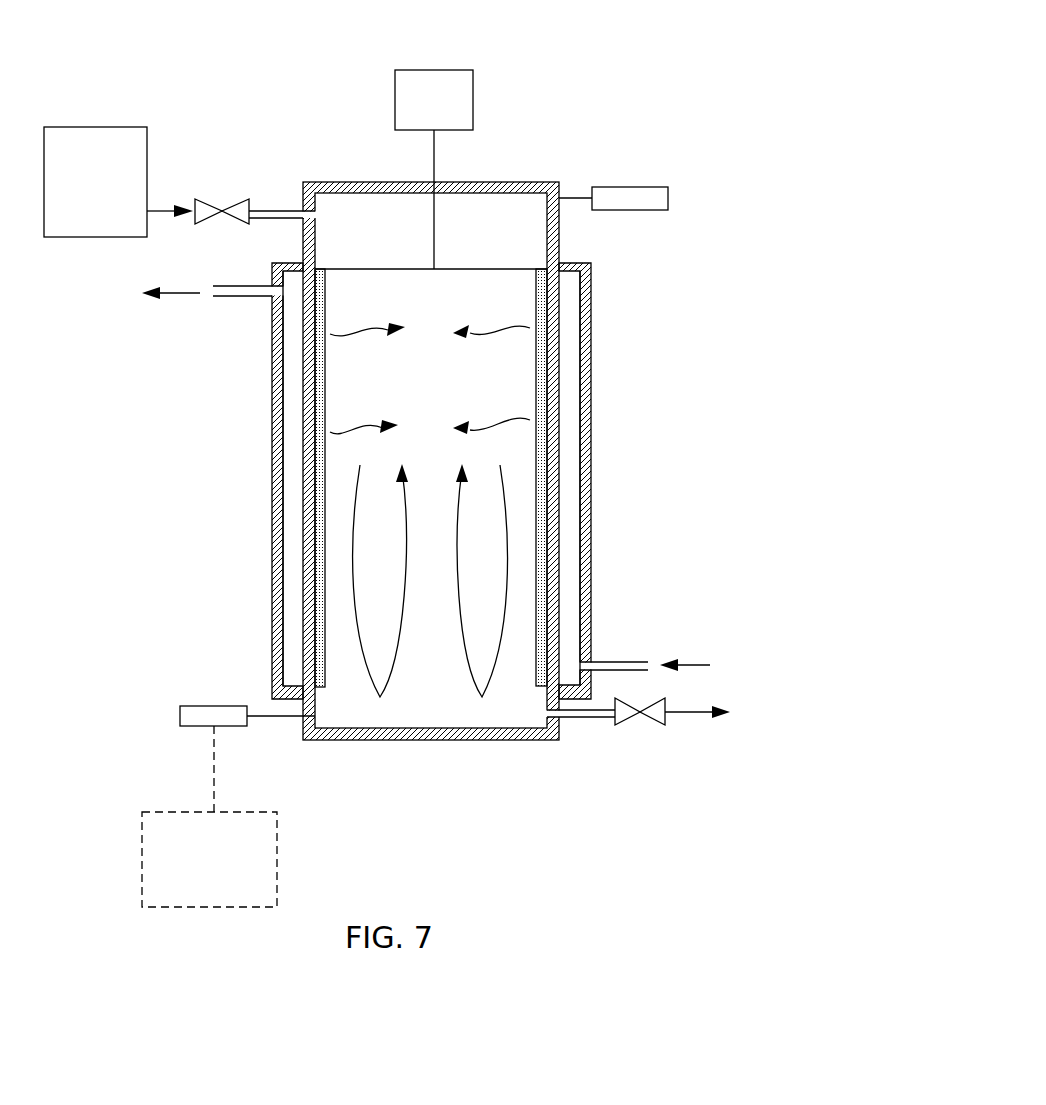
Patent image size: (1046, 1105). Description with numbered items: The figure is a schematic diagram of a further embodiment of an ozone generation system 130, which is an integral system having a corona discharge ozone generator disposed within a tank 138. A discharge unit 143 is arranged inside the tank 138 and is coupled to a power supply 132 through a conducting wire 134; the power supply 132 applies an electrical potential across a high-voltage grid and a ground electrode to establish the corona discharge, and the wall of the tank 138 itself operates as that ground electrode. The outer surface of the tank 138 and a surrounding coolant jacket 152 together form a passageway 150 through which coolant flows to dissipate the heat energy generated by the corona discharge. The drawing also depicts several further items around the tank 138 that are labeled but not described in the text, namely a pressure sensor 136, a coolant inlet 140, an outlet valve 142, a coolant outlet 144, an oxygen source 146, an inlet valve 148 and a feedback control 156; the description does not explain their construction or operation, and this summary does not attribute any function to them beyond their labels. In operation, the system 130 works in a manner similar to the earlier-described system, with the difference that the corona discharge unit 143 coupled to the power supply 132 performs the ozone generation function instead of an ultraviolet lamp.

The ozone generation system 130 is at (116, 51).
The power supply 132 is at (473, 98).
The conducting wire 134 is at (434, 172).
The pressure sensor 136 is at (628, 187).
The tank 138 is at (348, 740).
The coolant inlet 140 is at (608, 662).
The outlet valve 142 is at (597, 717).
The discharge unit 143 is at (172, 669).
The coolant outlet 144 is at (235, 297).
The oxygen source 146 is at (110, 218).
The inlet valve 148 is at (293, 210).
The passageway 150 is at (570, 350).
The coolant jacket 152 is at (592, 425).
The feedback control 156 is at (223, 895).